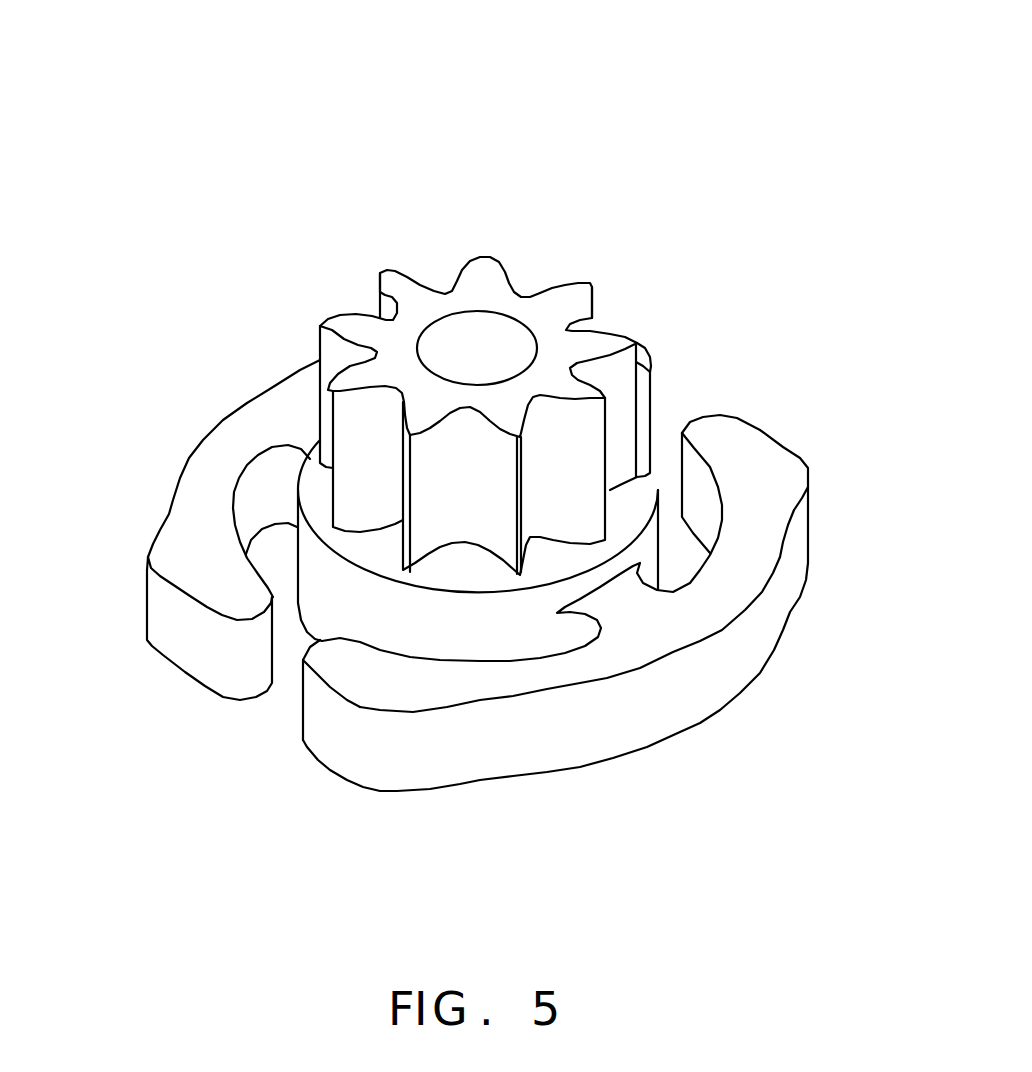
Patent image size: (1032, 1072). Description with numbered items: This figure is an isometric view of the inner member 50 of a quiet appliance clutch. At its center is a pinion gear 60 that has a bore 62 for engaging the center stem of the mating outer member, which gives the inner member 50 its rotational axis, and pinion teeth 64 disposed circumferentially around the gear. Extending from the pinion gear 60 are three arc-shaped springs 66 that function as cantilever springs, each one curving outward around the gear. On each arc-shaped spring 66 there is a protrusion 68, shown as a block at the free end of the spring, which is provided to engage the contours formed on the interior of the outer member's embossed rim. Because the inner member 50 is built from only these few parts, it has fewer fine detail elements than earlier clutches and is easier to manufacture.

The inner member 50 is at (472, 150).
The pinion gear 60 is at (487, 287).
The bore 62 is at (478, 348).
The pinion teeth 64 is at (637, 343).
The arc-shaped springs 66 is at (218, 480).
The protrusion 68 is at (147, 612).